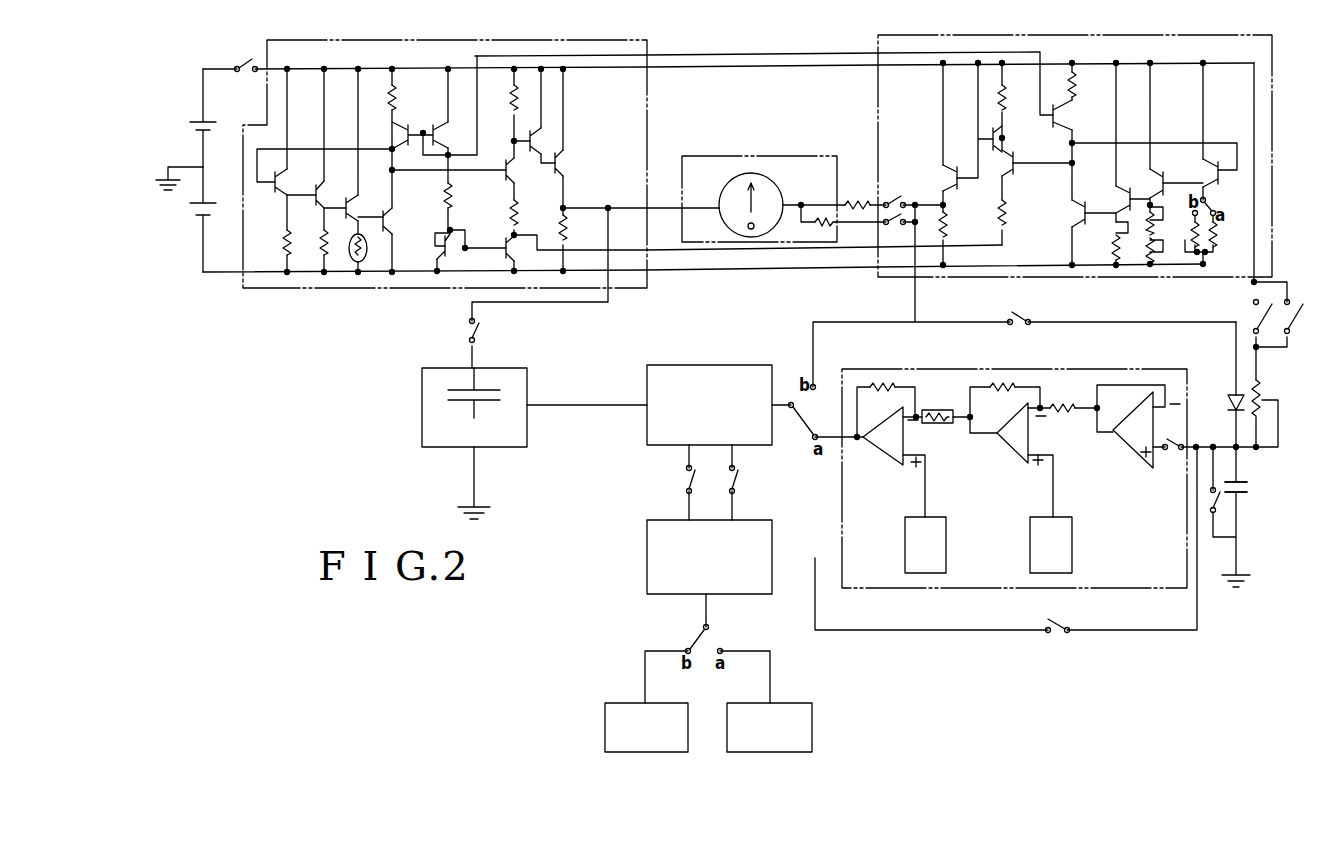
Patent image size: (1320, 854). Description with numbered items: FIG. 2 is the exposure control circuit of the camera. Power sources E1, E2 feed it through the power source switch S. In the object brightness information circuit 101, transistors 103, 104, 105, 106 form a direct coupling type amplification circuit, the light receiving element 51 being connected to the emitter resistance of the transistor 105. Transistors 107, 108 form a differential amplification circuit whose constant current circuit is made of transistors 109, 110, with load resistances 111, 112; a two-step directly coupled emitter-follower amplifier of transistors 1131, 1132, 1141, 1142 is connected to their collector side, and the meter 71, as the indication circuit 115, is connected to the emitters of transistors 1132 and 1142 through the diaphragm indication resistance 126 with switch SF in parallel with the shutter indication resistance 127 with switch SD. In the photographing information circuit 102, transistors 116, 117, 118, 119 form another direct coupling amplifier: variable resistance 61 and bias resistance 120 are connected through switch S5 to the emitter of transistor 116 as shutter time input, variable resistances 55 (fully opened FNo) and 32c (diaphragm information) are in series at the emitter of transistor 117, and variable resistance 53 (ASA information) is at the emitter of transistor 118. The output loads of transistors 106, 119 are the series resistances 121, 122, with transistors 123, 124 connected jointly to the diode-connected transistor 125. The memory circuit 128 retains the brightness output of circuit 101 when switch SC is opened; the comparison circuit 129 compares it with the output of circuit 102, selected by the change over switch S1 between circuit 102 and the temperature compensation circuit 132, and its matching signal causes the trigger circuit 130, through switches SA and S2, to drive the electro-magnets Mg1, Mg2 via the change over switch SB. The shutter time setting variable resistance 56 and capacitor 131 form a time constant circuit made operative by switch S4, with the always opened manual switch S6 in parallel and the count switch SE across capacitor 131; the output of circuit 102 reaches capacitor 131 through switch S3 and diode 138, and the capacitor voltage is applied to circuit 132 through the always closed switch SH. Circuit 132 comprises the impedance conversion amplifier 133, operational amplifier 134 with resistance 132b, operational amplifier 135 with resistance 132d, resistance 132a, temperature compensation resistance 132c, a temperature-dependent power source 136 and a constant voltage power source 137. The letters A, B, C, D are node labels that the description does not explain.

The object brightness information circuit 101 is at (413, 44).
The photographing information circuit 102 is at (1022, 44).
The transistor 103 is at (305, 176).
The transistor 104 is at (344, 188).
The transistor 105 is at (375, 203).
The transistor 106 is at (412, 221).
The transistor 107 is at (512, 178).
The transistor 108 is at (1002, 176).
The transistor 109 is at (435, 250).
The transistor 110 is at (512, 248).
The load resistance 111 is at (506, 102).
The load resistance 112 is at (1006, 98).
The transistor 1131 is at (536, 143).
The transistor 1132 is at (560, 165).
The transistor 1141 is at (992, 141).
The transistor 1142 is at (947, 174).
The indication circuit 115 is at (722, 157).
The transistor 116 is at (1208, 167).
The transistor 117 is at (1158, 180).
The transistor 118 is at (1122, 196).
The transistor 119 is at (1074, 213).
The bias resistance 120 is at (1235, 237).
The resistance 121 is at (398, 98).
The resistance 122 is at (1093, 84).
The transistor 123 is at (398, 137).
The transistor 124 is at (1063, 120).
The diode connected transistor 125 is at (454, 135).
The diaphragm indication resistance 126 is at (866, 190).
The shutter indication resistance 127 is at (822, 219).
The memory circuit 128 is at (422, 407).
The comparison circuit 129 is at (680, 365).
The trigger circuit 130 is at (647, 558).
The capacitor 131 is at (1257, 490).
The temperature compensation circuit 132 is at (948, 590).
The resistance 132a is at (1066, 392).
The resistance 132b is at (1002, 383).
The temperature compensation resistance 132c is at (938, 410).
The resistance 132d is at (882, 383).
The impedance conversion amplifier 133 is at (1132, 440).
The operational amplifier 134 is at (1010, 445).
The operational amplifier 135 is at (880, 447).
The power source 136 is at (1072, 548).
The constant voltage power source 137 is at (946, 548).
The diode 138 is at (1226, 403).
The light receiving element 51 is at (353, 236).
The variable resistance 53 is at (1110, 241).
The variable resistance 55 is at (1145, 222).
The shutter time setting variable resistance 56 is at (1268, 385).
The variable resistance 61 is at (1190, 232).
The meter 71 is at (726, 188).
The variable resistance 32c is at (1142, 252).
The power source E1 is at (194, 118).
The power source E2 is at (194, 219).
The power source switch S is at (246, 75).
The change over switch S1 is at (814, 412).
The switch S2 is at (748, 479).
The switch S3 is at (1024, 339).
The switch S4 is at (1254, 317).
The switch S5 is at (1212, 202).
The always opened switch for manual use S6 is at (1183, 479).
The switch SA is at (679, 479).
The change over switch SB is at (699, 637).
The switch SC is at (464, 328).
The switch SD is at (901, 231).
The count switch SE is at (1228, 508).
The switch SF is at (900, 191).
The always closed switch SH is at (1178, 459).
The node A is at (1240, 450).
The node B is at (1118, 436).
The node C is at (1000, 436).
The node D is at (866, 440).
The electro-magnet Mg1 is at (812, 727).
The electro-magnet Mg2 is at (605, 727).